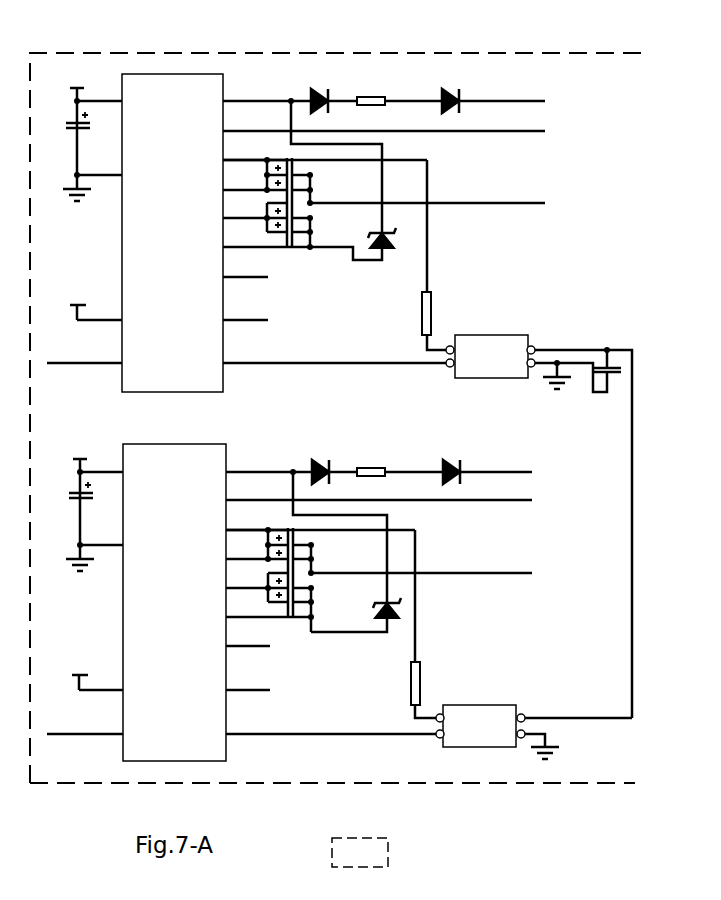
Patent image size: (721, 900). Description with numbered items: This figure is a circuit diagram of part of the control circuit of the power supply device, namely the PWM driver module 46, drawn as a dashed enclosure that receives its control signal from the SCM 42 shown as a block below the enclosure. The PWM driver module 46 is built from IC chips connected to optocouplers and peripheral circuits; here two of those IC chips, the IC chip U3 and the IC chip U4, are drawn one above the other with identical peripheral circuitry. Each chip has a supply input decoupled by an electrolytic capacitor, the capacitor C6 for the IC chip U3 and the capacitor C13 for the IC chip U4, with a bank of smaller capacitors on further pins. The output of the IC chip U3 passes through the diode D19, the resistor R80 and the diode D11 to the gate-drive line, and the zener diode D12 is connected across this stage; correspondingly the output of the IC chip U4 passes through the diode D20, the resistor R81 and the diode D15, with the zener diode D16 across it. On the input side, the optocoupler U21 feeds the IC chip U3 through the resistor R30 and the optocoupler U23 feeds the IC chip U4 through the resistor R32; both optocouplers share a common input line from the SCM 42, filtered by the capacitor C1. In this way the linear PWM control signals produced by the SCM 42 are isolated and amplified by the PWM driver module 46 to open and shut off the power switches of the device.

The PWM driver module 46 is at (248, 53).
The SCM 42 is at (352, 784).
The IC chip U3 is at (169, 222).
The IC chip U4 is at (171, 592).
The optocoupler U21 is at (490, 345).
The optocoupler U23 is at (480, 715).
The capacitor C1 is at (606, 390).
The capacitor C6 is at (82, 144).
The capacitor C13 is at (83, 515).
The diode D11 is at (452, 89).
The zener diode D12 is at (396, 228).
The diode D15 is at (452, 458).
The zener diode D16 is at (414, 610).
The diode D19 is at (321, 89).
The diode D20 is at (321, 459).
The resistor R30 is at (411, 313).
The resistor R32 is at (398, 683).
The resistor R80 is at (372, 90).
The resistor R81 is at (372, 461).